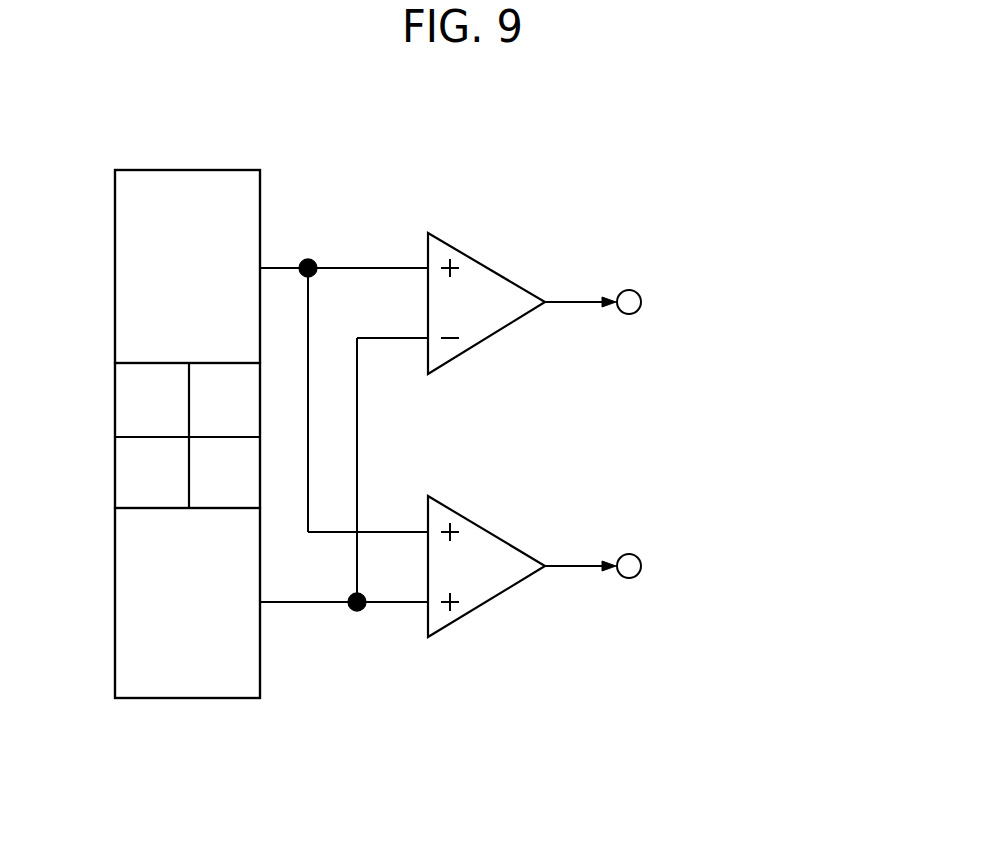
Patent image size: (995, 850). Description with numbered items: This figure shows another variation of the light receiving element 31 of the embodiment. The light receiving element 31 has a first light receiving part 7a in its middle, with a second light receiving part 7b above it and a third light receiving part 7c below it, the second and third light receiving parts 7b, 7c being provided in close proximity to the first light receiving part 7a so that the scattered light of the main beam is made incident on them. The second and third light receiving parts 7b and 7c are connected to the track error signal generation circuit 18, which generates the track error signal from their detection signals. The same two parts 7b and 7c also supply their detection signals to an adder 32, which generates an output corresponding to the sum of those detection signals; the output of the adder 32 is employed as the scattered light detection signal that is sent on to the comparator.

The light receiving element 31 is at (115, 170).
The first light receiving part 7a is at (153, 399).
The second light receiving part 7b is at (180, 186).
The third light receiving part 7c is at (197, 685).
The track error signal generation circuit 18 is at (492, 268).
The adder 32 is at (492, 532).